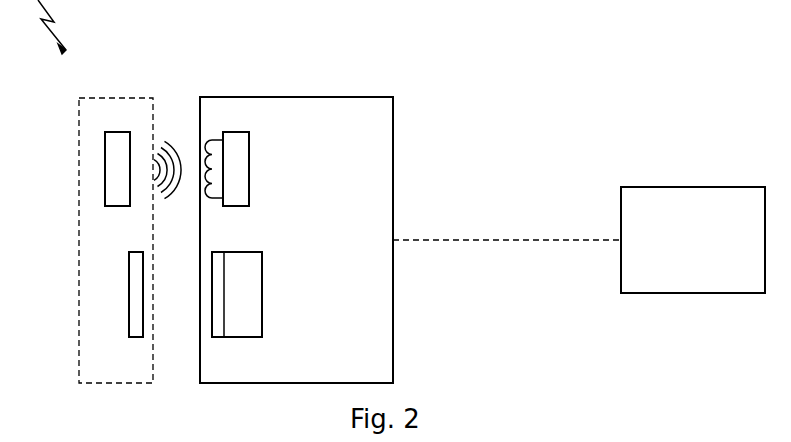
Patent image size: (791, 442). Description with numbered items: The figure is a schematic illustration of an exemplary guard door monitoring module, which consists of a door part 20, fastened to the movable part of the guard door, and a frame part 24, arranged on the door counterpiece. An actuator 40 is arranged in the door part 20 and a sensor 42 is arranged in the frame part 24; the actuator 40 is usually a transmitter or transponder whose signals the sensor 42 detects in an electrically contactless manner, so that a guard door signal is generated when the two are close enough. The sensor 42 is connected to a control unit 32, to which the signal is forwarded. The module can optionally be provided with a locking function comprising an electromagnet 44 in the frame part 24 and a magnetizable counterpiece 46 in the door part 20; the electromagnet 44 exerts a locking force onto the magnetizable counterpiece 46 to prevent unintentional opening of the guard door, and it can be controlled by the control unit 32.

The door part 20 is at (118, 98).
The frame part 24 is at (320, 97).
The control unit 32 is at (704, 187).
The actuator 40 is at (117, 184).
The sensor 42 is at (234, 171).
The electromagnet 44 is at (244, 332).
The magnetizable counterpiece 46 is at (137, 300).